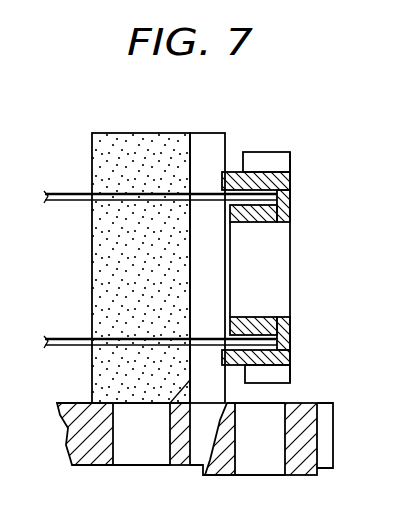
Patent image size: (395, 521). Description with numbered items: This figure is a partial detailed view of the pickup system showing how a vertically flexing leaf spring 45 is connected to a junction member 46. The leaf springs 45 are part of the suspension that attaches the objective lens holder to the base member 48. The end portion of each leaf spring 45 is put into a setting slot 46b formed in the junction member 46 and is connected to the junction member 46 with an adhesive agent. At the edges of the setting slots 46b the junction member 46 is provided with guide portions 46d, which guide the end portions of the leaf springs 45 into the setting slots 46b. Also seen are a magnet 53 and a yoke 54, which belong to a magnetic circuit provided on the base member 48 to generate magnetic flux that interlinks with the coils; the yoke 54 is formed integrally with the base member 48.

The vertically flexing leaf spring 45 is at (63, 193).
The junction member 46 is at (278, 250).
The setting slot 46b is at (270, 192).
The guide portion 46d is at (232, 172).
The base member 48 is at (96, 455).
The magnet 53 is at (141, 142).
The yoke 54 is at (210, 142).